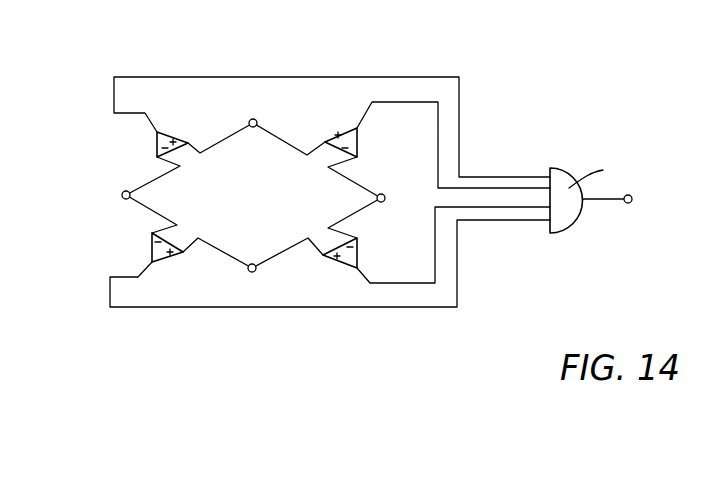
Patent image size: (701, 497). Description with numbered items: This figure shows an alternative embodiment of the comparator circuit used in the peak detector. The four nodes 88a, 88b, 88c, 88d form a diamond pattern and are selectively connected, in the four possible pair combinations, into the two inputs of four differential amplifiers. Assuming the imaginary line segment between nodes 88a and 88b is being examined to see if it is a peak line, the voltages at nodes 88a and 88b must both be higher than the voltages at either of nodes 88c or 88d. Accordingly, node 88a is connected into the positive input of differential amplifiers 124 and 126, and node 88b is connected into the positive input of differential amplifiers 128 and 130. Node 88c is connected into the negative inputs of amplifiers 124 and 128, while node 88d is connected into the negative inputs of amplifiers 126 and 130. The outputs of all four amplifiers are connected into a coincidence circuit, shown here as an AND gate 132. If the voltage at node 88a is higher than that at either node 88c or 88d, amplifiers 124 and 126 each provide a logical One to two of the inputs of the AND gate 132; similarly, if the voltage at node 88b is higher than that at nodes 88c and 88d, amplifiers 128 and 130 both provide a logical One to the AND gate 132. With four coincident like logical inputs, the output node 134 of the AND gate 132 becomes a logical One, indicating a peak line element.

The differential amplifier 124 is at (166, 131).
The differential amplifier 126 is at (359, 141).
The differential amplifier 128 is at (149, 247).
The differential amplifier 130 is at (360, 256).
The node 88a is at (258, 120).
The node 88b is at (249, 271).
The node 88c is at (122, 197).
The node 88d is at (385, 200).
The AND gate 132 is at (574, 228).
The output node 134 is at (632, 198).